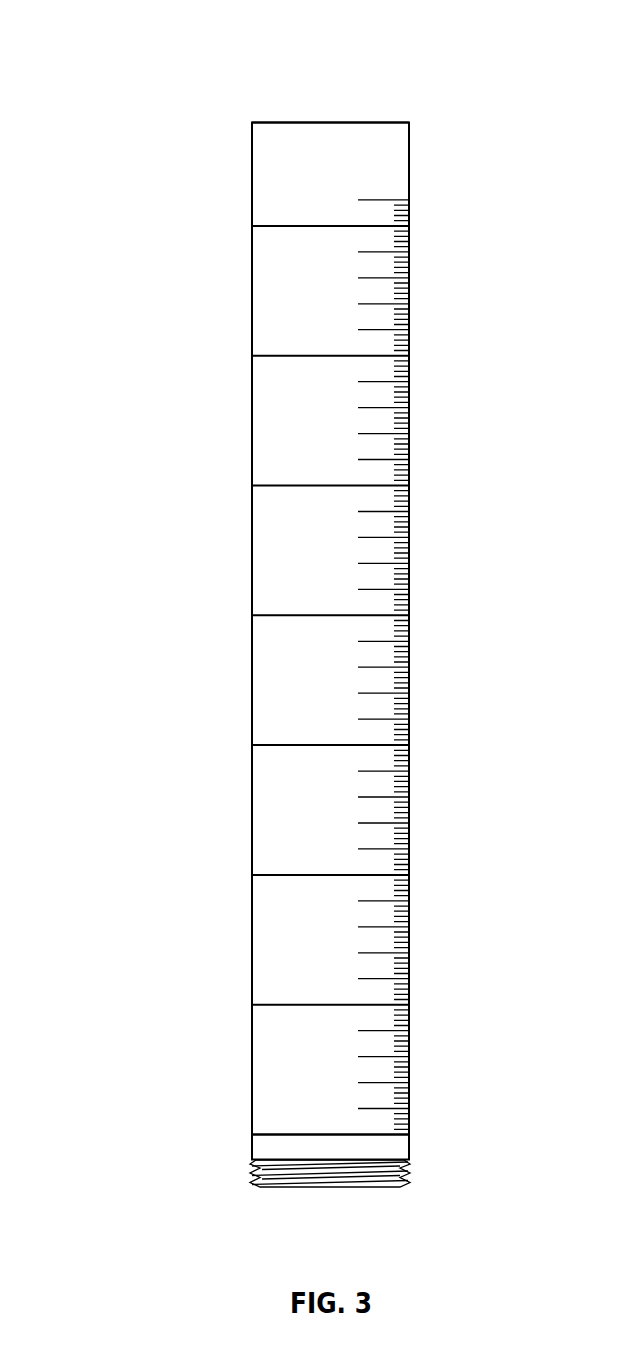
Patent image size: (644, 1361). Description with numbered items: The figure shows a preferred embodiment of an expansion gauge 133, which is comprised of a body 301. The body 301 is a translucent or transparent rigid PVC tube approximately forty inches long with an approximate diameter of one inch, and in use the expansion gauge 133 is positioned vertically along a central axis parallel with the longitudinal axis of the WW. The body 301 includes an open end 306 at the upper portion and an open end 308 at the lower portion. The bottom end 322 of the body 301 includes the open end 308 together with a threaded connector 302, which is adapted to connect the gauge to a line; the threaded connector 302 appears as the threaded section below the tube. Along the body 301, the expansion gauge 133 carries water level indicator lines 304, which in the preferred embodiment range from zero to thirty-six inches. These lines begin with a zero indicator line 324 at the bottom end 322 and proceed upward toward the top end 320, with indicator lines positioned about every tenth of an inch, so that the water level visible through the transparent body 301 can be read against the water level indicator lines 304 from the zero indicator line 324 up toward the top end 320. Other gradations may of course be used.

The expansion gauge 133 is at (125, 43).
The body 301 is at (252, 172).
The threaded connector 302 is at (415, 1173).
The water level indicator lines 304 is at (420, 200).
The open end 306 is at (263, 122).
The open end 308 is at (287, 1192).
The top end 320 is at (423, 138).
The bottom end 322 is at (177, 1138).
The zero indicator line 324 is at (252, 1133).